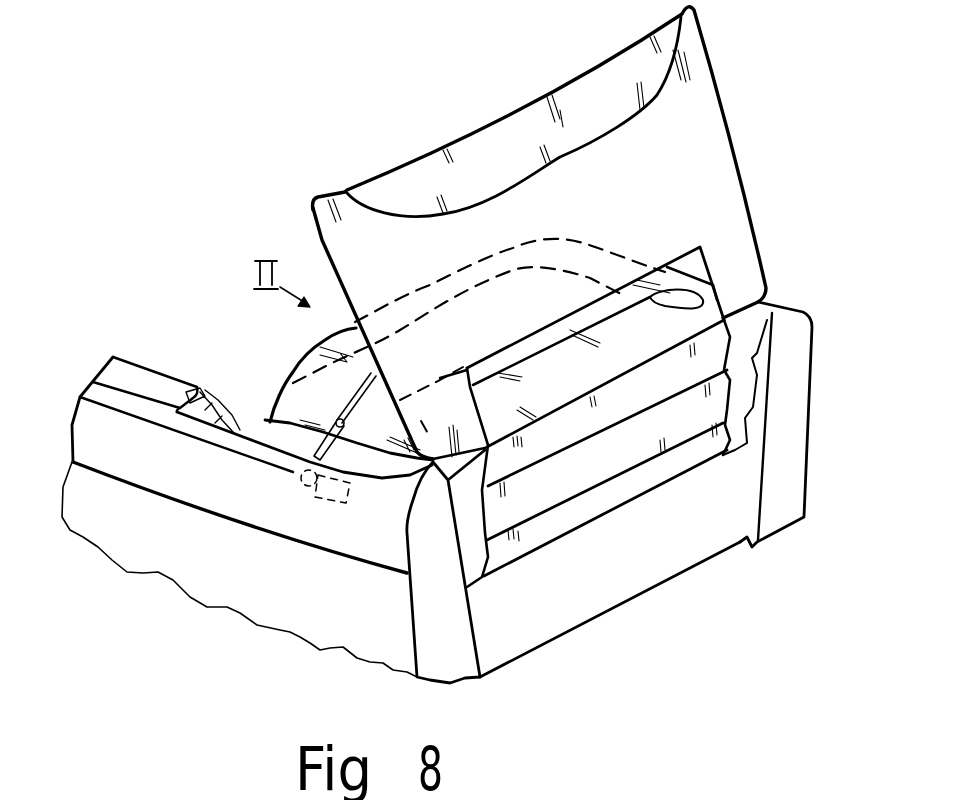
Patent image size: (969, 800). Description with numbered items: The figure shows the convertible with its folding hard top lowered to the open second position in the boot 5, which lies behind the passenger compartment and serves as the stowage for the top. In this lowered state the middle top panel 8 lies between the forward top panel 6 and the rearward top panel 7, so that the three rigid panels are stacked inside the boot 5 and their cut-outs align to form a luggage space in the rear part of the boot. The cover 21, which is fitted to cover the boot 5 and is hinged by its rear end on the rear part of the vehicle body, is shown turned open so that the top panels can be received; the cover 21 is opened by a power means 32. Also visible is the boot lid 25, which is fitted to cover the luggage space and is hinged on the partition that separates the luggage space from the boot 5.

The cover 21 is at (698, 188).
The boot 5 is at (258, 402).
The forward top panel 6 is at (325, 385).
The rearward top panel 7 is at (335, 447).
The power means 32 is at (313, 500).
The middle top panel 8 is at (382, 467).
The boot lid 25 is at (588, 375).